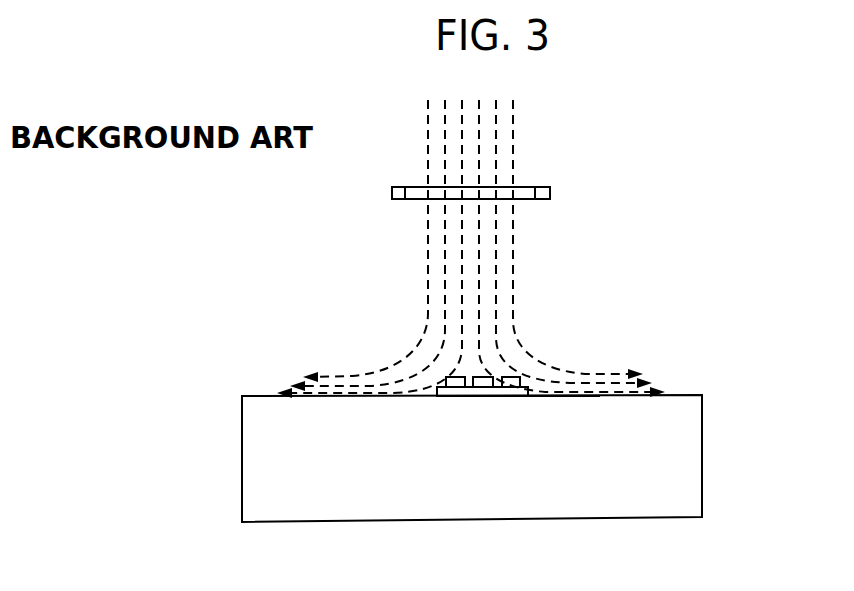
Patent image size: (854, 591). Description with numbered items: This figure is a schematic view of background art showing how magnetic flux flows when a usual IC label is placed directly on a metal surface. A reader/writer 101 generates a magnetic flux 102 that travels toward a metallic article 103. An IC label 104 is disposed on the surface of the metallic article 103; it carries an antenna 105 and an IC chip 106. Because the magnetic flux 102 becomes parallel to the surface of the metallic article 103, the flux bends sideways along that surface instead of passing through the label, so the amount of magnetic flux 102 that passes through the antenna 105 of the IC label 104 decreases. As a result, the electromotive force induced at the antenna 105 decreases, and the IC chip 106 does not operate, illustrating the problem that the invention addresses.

The reader/writer 101 is at (551, 192).
The magnetic flux 102 is at (514, 238).
The metallic article 103 is at (703, 455).
The IC label 104 is at (536, 395).
The antenna 105 is at (530, 388).
The IC chip 106 is at (483, 377).